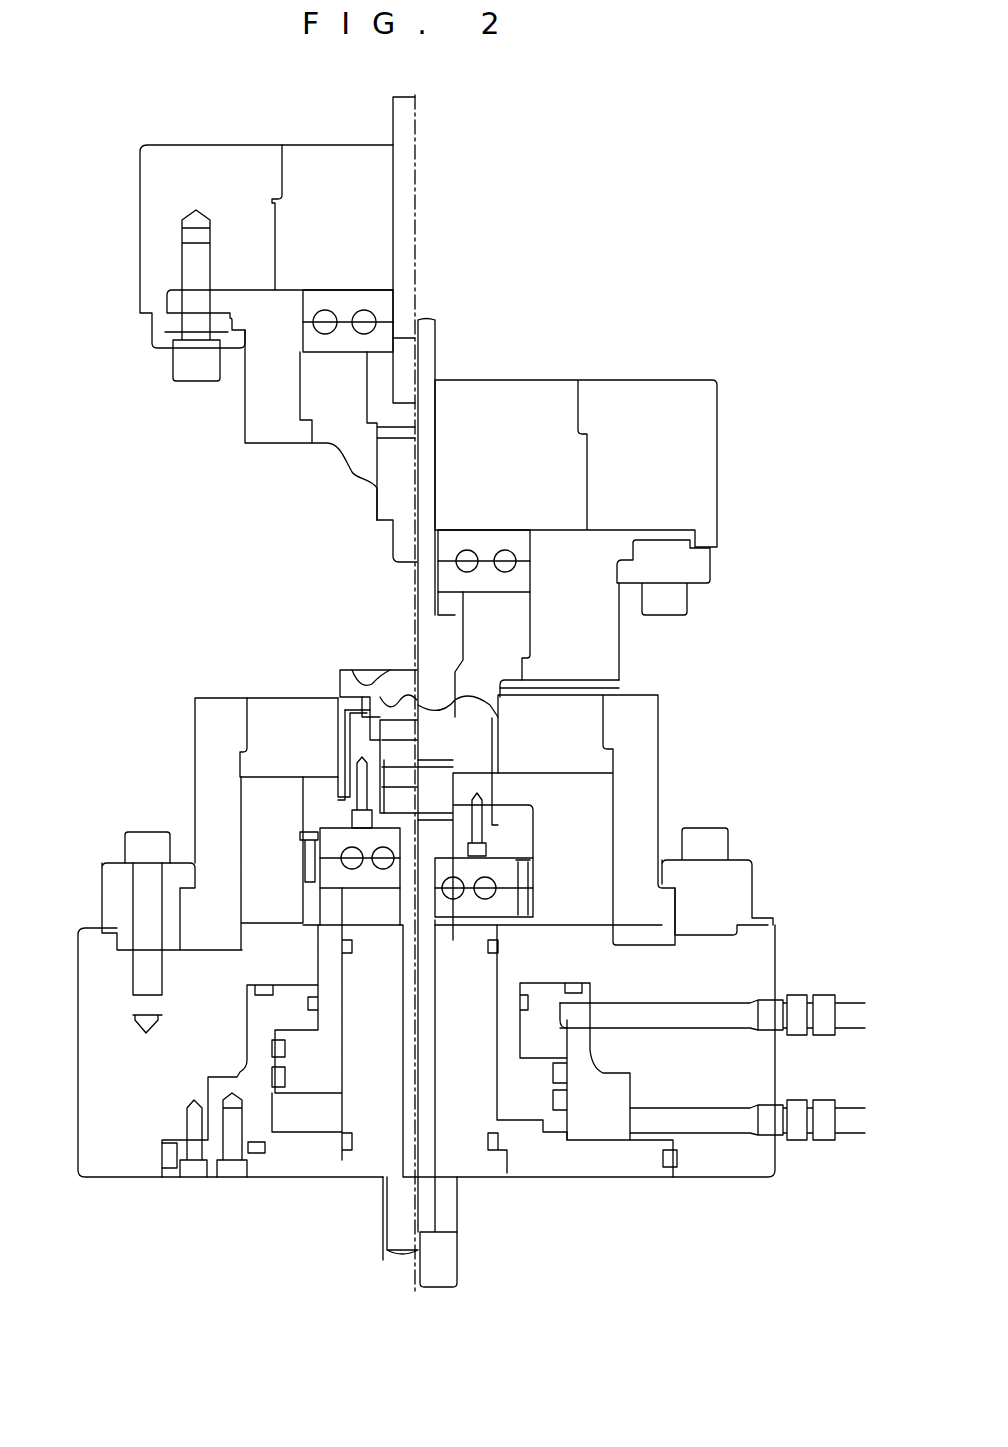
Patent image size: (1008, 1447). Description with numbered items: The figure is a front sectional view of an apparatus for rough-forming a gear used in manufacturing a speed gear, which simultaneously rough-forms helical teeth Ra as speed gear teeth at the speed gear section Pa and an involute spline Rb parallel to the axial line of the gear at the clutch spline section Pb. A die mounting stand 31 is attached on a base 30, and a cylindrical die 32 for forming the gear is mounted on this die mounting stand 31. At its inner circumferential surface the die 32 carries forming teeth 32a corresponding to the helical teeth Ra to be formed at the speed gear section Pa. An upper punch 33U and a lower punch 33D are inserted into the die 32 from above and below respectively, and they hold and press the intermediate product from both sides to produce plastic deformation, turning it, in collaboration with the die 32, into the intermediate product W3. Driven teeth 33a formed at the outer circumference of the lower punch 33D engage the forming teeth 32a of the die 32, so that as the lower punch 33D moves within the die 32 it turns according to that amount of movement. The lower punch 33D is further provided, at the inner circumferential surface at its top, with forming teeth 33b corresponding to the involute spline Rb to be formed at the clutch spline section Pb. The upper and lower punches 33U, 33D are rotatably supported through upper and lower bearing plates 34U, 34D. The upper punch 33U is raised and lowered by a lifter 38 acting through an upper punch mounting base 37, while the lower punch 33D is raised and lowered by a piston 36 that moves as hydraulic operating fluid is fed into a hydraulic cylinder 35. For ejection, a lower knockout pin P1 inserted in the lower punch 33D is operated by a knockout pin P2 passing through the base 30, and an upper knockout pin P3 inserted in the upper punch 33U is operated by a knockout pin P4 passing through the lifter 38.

The knockout pin P4 is at (405, 134).
The lifter 38 is at (528, 398).
The upper bearing plate 34U is at (507, 560).
The upper punch mounting base 37 is at (592, 588).
The upper punch 33U is at (502, 638).
The intermediate product W3 is at (482, 730).
The die 32 is at (578, 730).
The lower punch 33D is at (478, 768).
The lower bearing plate 34D is at (498, 867).
The die mounting stand 31 is at (221, 702).
The piston 36 is at (520, 940).
The hydraulic cylinder 35 is at (575, 1043).
The base 30 is at (725, 1163).
The upper knockout pin P3 is at (407, 533).
The forming teeth 32a is at (335, 690).
The speed gear section Pa is at (347, 652).
The forming teeth 33b is at (397, 707).
The clutch spline section Pb is at (370, 710).
The helical teeth Ra is at (367, 683).
The involute spline Rb is at (367, 700).
The lower knockout pin P1 is at (395, 757).
The driven teeth 33a is at (337, 787).
The knockout pin P2 is at (407, 902).